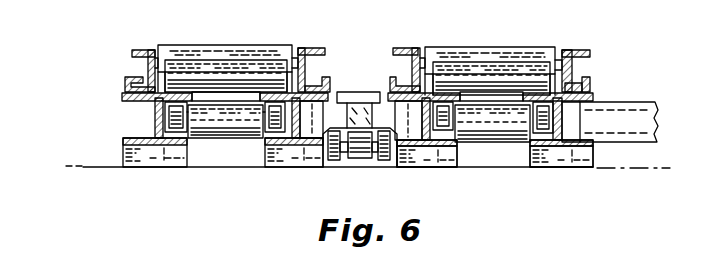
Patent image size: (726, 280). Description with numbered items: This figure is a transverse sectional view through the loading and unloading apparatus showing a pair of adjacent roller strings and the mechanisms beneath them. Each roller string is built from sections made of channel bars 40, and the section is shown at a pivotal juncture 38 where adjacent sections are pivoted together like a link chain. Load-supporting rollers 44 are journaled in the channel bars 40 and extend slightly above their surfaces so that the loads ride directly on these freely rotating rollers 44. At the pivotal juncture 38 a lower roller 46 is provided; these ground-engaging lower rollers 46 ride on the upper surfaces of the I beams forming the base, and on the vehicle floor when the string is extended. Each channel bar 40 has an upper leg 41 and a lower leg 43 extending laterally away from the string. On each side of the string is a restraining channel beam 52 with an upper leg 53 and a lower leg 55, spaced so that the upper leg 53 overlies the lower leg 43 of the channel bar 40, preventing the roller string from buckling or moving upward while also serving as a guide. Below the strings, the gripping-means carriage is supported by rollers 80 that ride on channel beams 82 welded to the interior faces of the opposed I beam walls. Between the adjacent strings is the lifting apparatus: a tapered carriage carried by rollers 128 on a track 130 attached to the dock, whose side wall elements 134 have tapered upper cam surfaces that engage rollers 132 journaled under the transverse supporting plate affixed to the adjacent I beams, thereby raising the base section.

The pivotal juncture 38 is at (445, 97).
The channel bar 40 is at (313, 50).
The upper leg 41 is at (578, 50).
The lower leg 43 is at (581, 122).
The load-supporting roller 44 is at (227, 47).
The lower roller 46 is at (270, 63).
The restraining channel beam 52 is at (318, 78).
The upper leg 53 is at (587, 76).
The lower leg 55 is at (595, 113).
The roller 80 is at (460, 113).
The channel beam 82 is at (447, 147).
The roller 128 is at (350, 154).
The track 130 is at (350, 158).
The roller 132 is at (373, 92).
The side wall element 134 is at (332, 158).